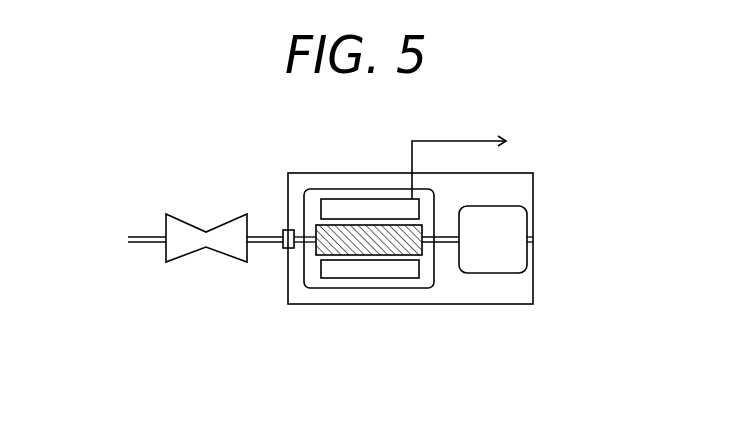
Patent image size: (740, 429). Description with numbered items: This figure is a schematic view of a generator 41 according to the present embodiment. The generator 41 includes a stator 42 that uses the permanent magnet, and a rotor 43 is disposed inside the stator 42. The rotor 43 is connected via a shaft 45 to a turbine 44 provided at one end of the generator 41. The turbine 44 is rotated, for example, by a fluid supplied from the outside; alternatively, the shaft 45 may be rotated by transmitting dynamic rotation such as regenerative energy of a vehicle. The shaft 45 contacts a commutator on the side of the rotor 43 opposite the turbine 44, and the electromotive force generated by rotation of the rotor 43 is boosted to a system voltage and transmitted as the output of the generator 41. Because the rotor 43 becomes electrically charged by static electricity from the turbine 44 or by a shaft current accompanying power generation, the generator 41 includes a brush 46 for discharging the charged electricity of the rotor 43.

The generator 41 is at (313, 172).
The stator 42 is at (353, 274).
The rotor 43 is at (378, 252).
The turbine 44 is at (232, 218).
The shaft 45 is at (268, 245).
The brush 46 is at (488, 264).